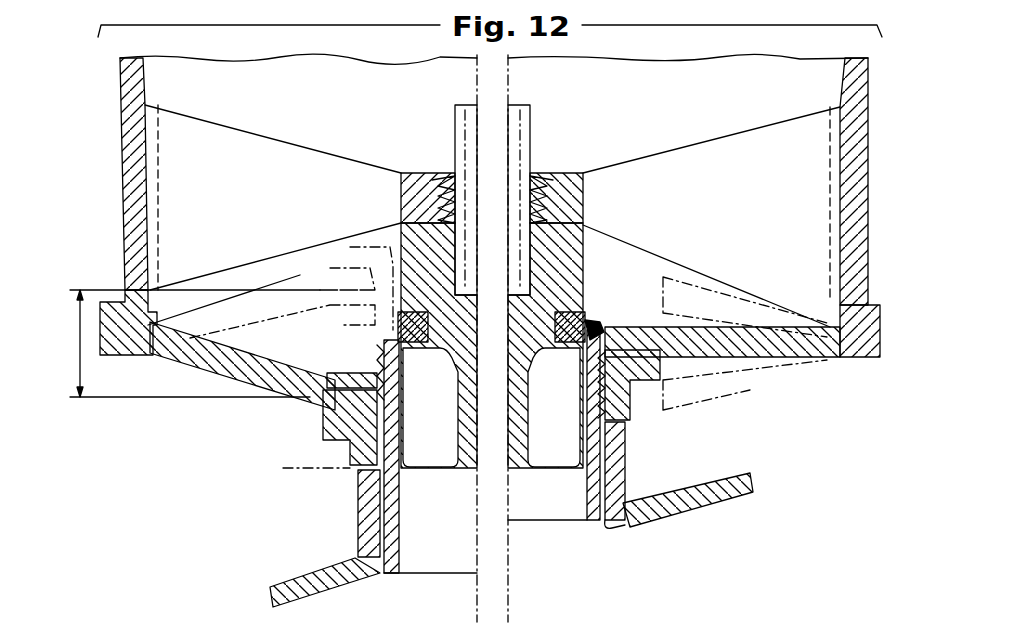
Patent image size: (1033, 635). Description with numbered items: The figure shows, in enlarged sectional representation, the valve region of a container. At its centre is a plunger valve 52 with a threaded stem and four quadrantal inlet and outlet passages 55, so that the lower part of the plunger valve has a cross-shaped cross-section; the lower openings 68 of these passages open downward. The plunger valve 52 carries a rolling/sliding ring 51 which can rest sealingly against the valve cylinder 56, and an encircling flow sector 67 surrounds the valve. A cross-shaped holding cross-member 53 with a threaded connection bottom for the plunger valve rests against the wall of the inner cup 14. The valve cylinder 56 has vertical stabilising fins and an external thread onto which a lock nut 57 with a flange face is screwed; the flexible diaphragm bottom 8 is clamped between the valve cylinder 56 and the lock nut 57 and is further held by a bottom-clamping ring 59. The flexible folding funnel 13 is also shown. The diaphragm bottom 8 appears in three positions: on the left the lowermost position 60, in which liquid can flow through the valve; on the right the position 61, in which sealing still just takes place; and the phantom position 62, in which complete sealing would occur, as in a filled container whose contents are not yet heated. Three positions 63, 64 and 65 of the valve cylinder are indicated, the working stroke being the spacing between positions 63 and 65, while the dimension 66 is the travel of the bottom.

The flexible diaphragm bottom 8 is at (200, 378).
The flexible folding funnel 13 is at (620, 482).
The inner cup 14 is at (853, 222).
The rolling/sliding ring 51 is at (348, 332).
The plunger valve 52 is at (562, 248).
The holding cross-member 53 is at (650, 160).
The inlet and outlet passages 55 is at (564, 402).
The valve cylinder 56 is at (593, 327).
The lock nut 57 is at (630, 400).
The bottom-clamping ring 59 is at (880, 330).
The diaphragm bottom lowermost position 60 is at (330, 405).
The diaphragm bottom sealing position 61 is at (745, 350).
The diaphragm bottom complete-sealing position 62 is at (283, 278).
The valve cylinder position 63 is at (435, 575).
The valve cylinder position 64 is at (560, 522).
The valve cylinder position 65 is at (283, 470).
The travel of the bottom 66 is at (80, 345).
The encircling flow sector 67 is at (390, 360).
The lower openings 68 is at (432, 468).